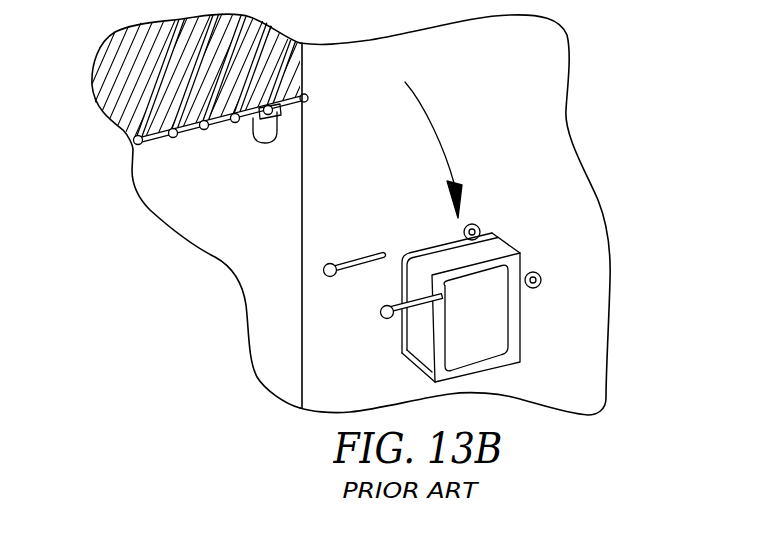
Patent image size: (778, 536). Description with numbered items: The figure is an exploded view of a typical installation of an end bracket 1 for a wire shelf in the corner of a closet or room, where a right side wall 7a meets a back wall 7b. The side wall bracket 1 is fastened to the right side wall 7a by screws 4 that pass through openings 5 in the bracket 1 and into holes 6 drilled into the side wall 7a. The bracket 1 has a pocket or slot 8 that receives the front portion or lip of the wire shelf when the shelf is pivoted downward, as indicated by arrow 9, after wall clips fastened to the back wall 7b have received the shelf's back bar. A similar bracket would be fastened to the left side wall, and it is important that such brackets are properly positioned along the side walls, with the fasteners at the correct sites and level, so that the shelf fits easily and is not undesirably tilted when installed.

The side wall bracket 1 is at (495, 335).
The screws 4 is at (353, 268).
The openings 5 is at (480, 227).
The holes 6 is at (462, 233).
The right side wall 7a is at (548, 115).
The back wall 7b is at (240, 248).
The pocket or slot 8 is at (430, 341).
The arrow 9 is at (440, 132).